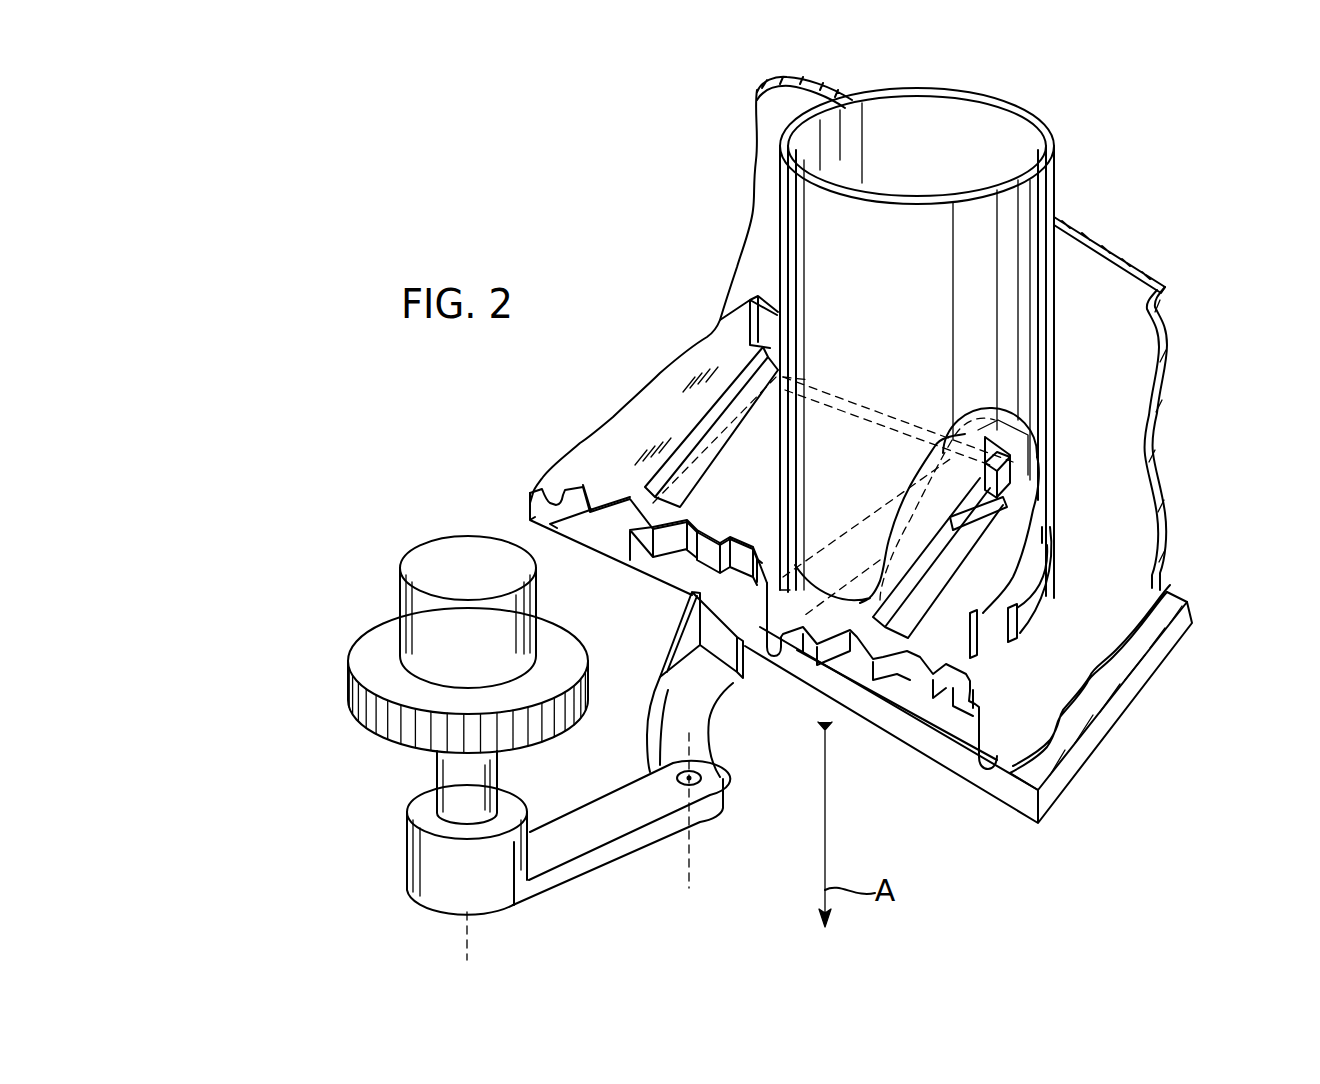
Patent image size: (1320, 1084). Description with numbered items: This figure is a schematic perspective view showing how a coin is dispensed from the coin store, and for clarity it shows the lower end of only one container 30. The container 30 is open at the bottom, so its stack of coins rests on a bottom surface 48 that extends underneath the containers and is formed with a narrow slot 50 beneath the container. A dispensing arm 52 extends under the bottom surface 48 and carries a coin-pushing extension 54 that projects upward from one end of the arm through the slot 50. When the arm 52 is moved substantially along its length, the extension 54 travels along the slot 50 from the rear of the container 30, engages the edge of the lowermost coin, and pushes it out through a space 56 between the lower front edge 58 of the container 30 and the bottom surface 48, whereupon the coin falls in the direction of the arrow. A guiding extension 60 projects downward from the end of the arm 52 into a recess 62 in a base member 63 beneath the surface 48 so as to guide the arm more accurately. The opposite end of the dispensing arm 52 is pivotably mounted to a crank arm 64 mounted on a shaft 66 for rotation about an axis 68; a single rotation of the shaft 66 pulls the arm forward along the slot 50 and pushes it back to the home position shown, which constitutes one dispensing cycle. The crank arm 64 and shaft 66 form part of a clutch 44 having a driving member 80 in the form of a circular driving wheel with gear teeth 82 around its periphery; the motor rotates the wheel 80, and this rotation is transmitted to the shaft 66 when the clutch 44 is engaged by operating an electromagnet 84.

The container 30 is at (1028, 195).
The clutch 44 is at (261, 607).
The bottom surface 48 is at (1090, 650).
The slot 50 is at (950, 655).
The dispensing arm 52 is at (660, 705).
The coin-pushing extension 54 is at (1015, 480).
The space 56 is at (833, 633).
The lower front edge 58 is at (815, 570).
The guiding extension 60 is at (983, 528).
The recess 62 is at (873, 697).
The base member 63 is at (1170, 620).
The crank arm 64 is at (597, 835).
The shaft 66 is at (452, 780).
The axis 68 is at (468, 937).
The driving member 80 is at (375, 638).
The gear teeth 82 is at (355, 695).
The electromagnet 84 is at (443, 560).